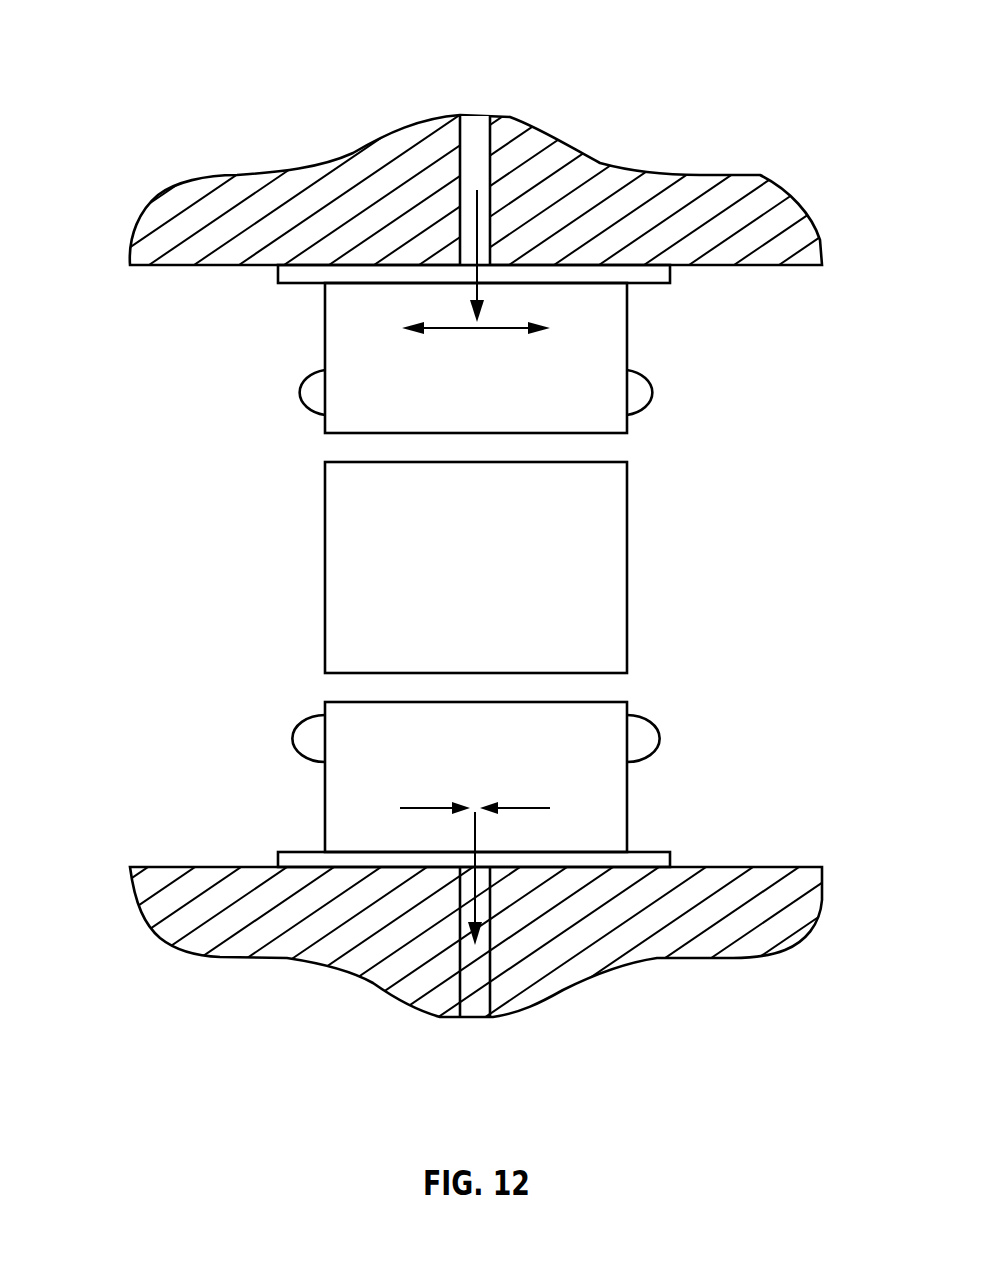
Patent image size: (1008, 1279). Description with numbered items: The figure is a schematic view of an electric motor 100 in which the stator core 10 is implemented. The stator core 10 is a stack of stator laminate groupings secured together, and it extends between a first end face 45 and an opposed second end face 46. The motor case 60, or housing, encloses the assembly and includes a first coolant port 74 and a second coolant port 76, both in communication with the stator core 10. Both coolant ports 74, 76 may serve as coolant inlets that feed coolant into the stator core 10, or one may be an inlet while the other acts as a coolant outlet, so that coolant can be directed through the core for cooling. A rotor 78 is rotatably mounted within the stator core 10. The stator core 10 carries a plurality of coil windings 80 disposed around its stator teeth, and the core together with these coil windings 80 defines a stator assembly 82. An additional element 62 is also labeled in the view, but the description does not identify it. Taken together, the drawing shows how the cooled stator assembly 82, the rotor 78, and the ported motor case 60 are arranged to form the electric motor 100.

The electric motor 100 is at (160, 98).
The motor case 60 is at (387, 183).
The first coolant port 74 is at (477, 130).
The second coolant port 76 is at (478, 980).
The lower vertebral body 62 is at (738, 578).
The first end face 45 is at (325, 320).
The second end face 46 is at (627, 335).
The stator core 10 is at (325, 348).
The coil windings 80 is at (657, 390).
The stator assembly 82 is at (805, 283).
The rotor 78 is at (352, 565).